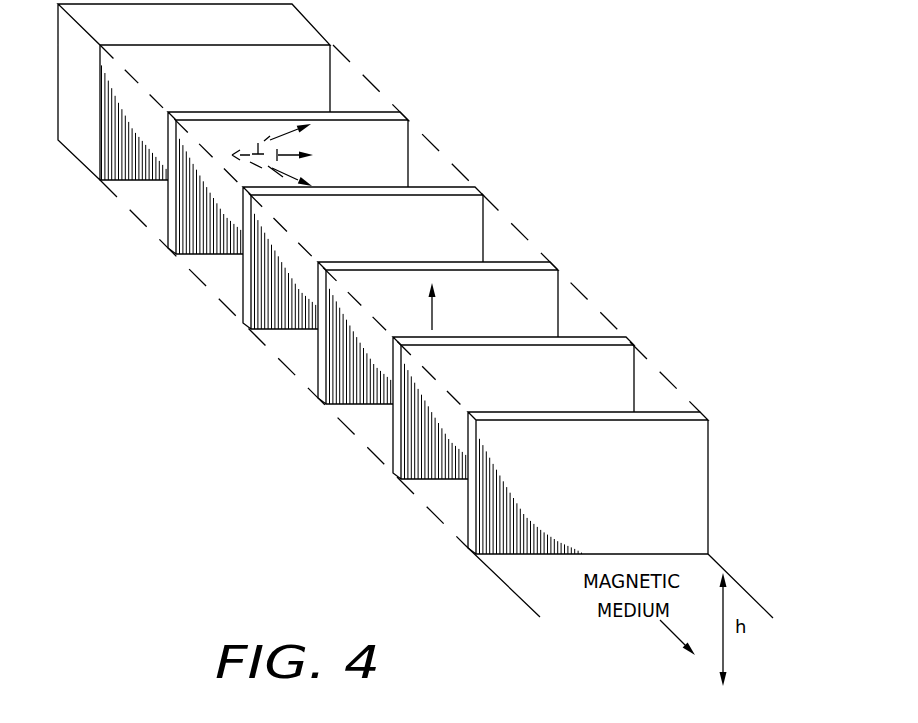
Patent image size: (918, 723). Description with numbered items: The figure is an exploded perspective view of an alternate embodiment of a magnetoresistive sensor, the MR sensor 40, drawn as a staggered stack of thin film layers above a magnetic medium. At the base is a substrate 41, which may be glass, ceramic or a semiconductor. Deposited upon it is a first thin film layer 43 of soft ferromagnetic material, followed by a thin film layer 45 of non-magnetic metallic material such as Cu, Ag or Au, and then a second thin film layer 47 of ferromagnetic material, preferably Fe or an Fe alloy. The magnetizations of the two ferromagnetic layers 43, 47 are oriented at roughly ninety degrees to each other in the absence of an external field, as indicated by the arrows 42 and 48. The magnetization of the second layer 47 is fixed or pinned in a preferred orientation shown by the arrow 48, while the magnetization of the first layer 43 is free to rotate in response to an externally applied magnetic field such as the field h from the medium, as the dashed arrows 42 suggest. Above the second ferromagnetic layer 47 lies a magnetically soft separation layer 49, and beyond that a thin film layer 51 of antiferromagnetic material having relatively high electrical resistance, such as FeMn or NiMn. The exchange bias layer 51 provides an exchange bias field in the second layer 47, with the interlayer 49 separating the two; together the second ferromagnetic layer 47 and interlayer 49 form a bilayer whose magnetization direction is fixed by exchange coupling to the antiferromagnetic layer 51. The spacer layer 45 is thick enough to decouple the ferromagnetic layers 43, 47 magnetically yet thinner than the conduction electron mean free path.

The MR sensor 40 is at (192, 372).
The substrate 41 is at (306, 36).
The arrows indicating magnetization of first ferromagnetic layer 42 is at (258, 143).
The first thin film layer of soft ferromagnetic material 43 is at (382, 108).
The non-magnetic metallic spacer layer 45 is at (452, 186).
The second thin film layer of ferromagnetic material 47 is at (515, 262).
The arrow indicating pinned magnetization of second ferromagnetic layer 48 is at (436, 326).
The magnetically soft separation layer 49 is at (608, 337).
The antiferromagnetic exchange bias layer 51 is at (707, 480).